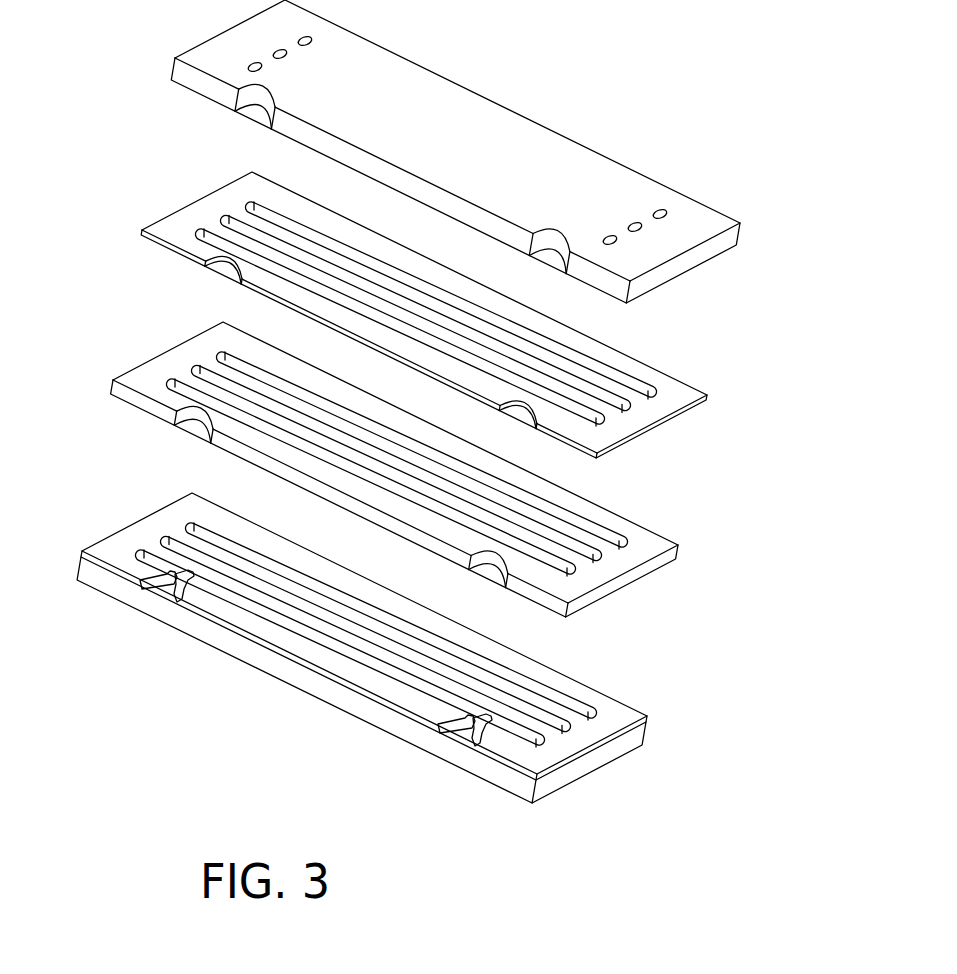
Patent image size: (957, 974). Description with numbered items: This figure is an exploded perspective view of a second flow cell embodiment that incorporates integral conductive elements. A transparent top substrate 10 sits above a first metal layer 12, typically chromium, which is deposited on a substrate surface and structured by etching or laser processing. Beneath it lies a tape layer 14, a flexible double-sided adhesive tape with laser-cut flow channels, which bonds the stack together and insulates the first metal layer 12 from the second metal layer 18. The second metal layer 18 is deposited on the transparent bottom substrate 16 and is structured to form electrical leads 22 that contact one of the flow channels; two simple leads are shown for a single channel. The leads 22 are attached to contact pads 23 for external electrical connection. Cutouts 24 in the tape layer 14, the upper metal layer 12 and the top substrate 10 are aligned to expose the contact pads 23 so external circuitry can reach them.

The top substrate 10 is at (703, 223).
The metal layer 12 is at (680, 390).
The tape layer 14 is at (658, 543).
The bottom substrate 16 is at (642, 740).
The second metal layer 18 is at (610, 720).
The electrical leads 22 is at (483, 722).
The contact pads 23 is at (460, 725).
The cutouts 24 is at (255, 100).